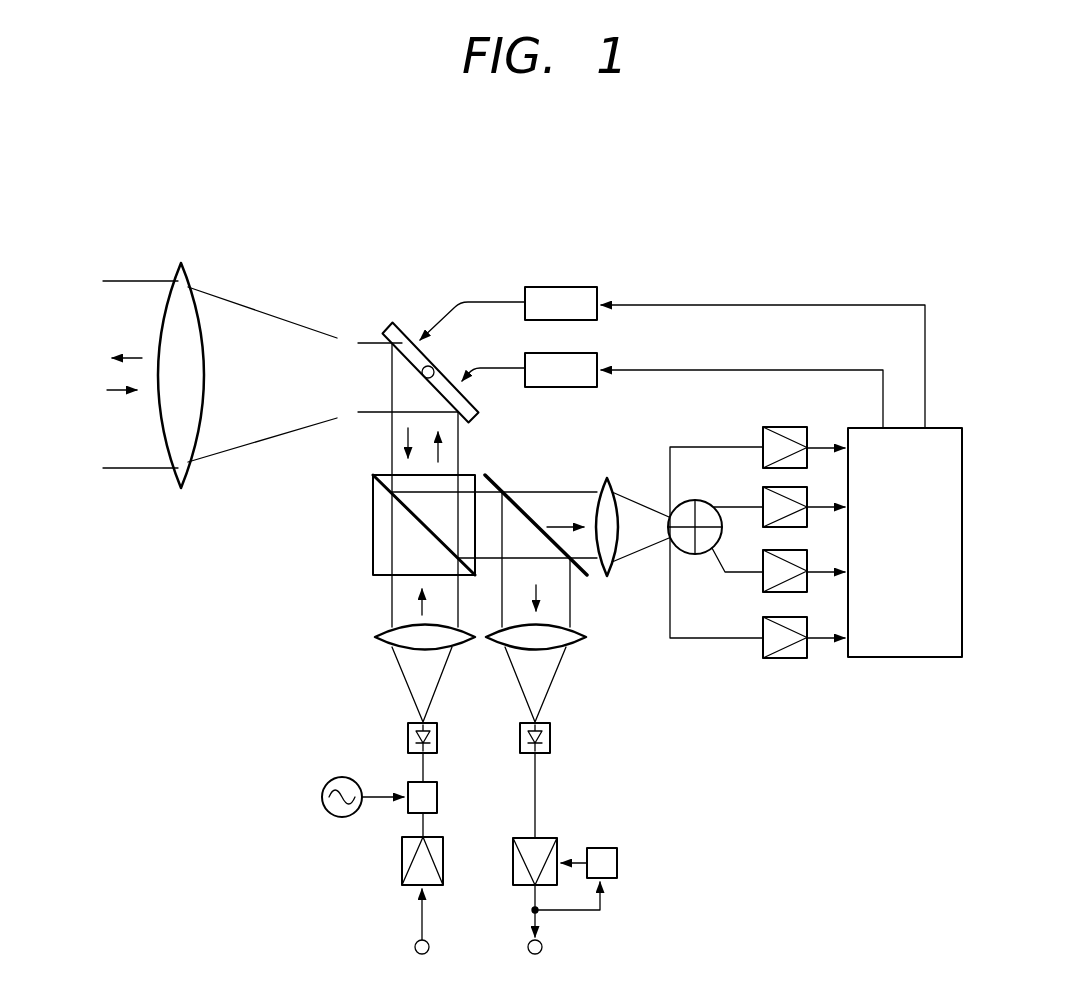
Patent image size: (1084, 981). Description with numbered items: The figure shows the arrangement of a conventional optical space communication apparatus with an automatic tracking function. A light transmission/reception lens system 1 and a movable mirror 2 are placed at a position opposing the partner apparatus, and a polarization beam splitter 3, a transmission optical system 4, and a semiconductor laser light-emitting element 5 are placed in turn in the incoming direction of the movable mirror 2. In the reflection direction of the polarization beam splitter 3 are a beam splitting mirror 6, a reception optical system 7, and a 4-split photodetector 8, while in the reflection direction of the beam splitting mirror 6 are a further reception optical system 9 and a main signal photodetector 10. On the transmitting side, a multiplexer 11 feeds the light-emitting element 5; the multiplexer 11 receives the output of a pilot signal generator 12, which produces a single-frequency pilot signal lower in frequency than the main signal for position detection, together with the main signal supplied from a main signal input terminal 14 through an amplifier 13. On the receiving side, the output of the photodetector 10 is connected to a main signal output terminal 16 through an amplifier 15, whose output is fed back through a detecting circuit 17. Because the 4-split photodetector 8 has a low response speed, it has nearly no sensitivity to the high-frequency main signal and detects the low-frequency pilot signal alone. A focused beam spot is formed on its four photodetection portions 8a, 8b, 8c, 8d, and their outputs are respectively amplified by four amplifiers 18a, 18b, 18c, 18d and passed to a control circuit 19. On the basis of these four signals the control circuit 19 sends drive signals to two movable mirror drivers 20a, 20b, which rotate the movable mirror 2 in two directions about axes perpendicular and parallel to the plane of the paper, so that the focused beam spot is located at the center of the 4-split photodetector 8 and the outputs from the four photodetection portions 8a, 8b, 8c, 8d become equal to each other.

The light transmission/reception lens system 1 is at (186, 283).
The movable mirror 2 is at (407, 345).
The polarization beam splitter 3 is at (382, 500).
The transmission optical system 4 is at (377, 632).
The semiconductor laser light-emitting element 5 is at (403, 733).
The beam splitting mirror 6 is at (502, 490).
The reception optical system 7 is at (608, 485).
The 4-split photodetector 8 is at (680, 557).
The photodetection portion 8a is at (674, 510).
The photodetection portion 8b is at (708, 507).
The photodetection portion 8c is at (705, 547).
The photodetection portion 8d is at (669, 544).
The reception optical system 9 is at (584, 632).
The main signal photodetector 10 is at (550, 735).
The multiplexer 11 is at (408, 787).
The pilot signal generator 12 is at (327, 780).
The amplifier 13 is at (402, 850).
The main signal input terminal 14 is at (415, 947).
The amplifier 15 is at (514, 840).
The main signal output terminal 16 is at (543, 947).
The detecting circuit 17 is at (617, 860).
The amplifier 18a is at (808, 434).
The amplifier 18b is at (808, 492).
The amplifier 18c is at (808, 560).
The amplifier 18d is at (808, 627).
The control circuit 19 is at (940, 428).
The movable mirror driver 20a is at (577, 295).
The movable mirror driver 20b is at (553, 377).